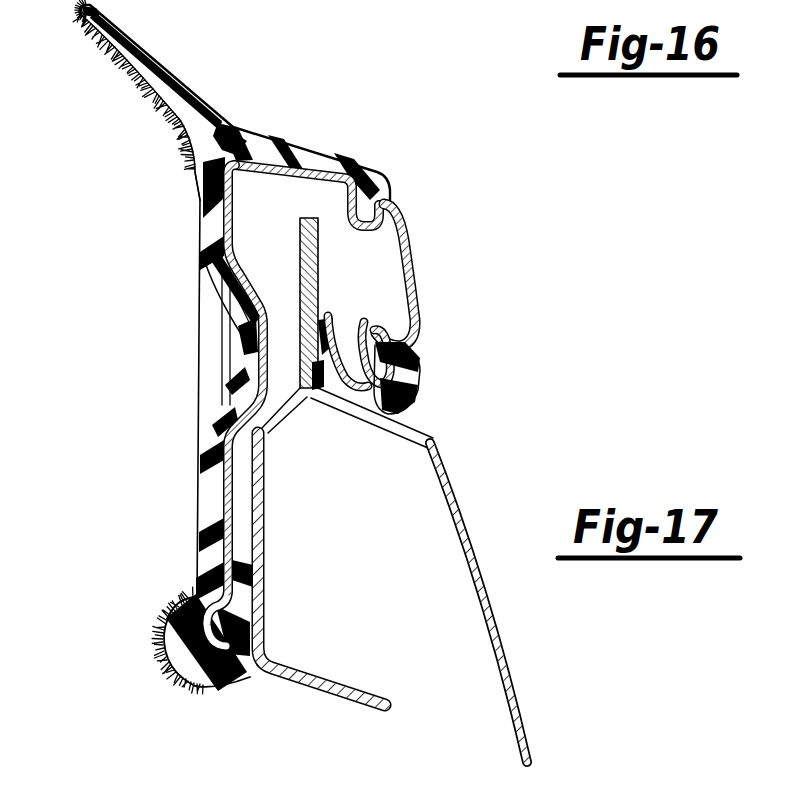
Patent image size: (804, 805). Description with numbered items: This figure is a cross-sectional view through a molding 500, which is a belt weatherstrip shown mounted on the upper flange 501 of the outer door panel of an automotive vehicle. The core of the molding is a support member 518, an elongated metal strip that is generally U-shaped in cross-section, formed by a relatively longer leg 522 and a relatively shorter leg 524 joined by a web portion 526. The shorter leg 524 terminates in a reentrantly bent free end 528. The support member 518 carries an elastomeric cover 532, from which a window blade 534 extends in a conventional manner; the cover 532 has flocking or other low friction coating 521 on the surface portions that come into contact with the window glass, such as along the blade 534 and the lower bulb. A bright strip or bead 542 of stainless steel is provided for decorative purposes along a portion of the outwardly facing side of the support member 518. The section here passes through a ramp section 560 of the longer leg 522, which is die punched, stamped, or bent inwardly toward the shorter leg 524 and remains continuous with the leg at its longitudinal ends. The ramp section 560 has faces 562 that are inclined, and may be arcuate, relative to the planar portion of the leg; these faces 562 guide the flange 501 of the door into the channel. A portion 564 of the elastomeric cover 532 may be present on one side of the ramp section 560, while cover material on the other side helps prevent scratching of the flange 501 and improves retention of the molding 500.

The molding 500 is at (180, 235).
The upper flange 501 is at (318, 264).
The support member 518 is at (197, 494).
The flocking or other low friction coating 521 is at (82, 42).
The longer leg 522 is at (201, 457).
The shorter leg 524 is at (418, 374).
The web portion 526 is at (258, 150).
The reentrantly bent free end 528 is at (343, 332).
The elastomeric cover 532 is at (205, 147).
The window blade 534 is at (159, 62).
The bright strip or bead 542 is at (417, 256).
The ramp section 560 is at (258, 333).
The faces 562 is at (256, 288).
The portion of elastomeric cover 564 is at (247, 360).